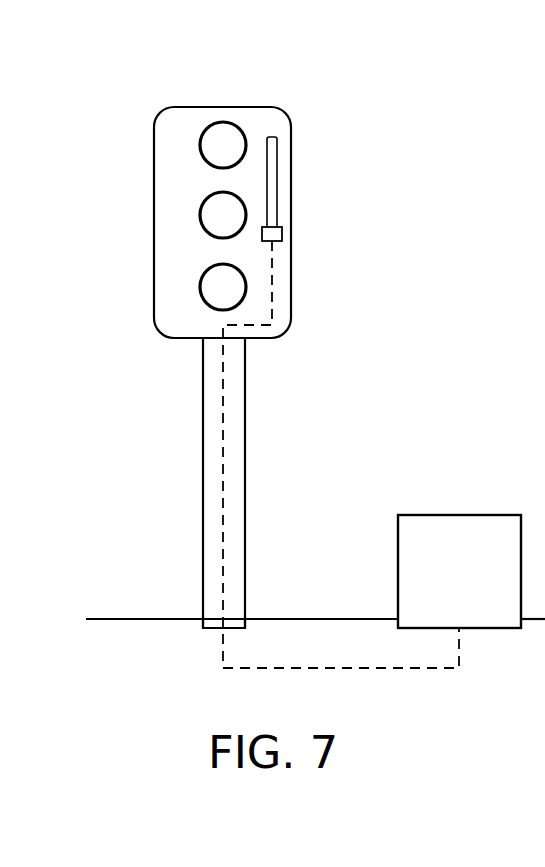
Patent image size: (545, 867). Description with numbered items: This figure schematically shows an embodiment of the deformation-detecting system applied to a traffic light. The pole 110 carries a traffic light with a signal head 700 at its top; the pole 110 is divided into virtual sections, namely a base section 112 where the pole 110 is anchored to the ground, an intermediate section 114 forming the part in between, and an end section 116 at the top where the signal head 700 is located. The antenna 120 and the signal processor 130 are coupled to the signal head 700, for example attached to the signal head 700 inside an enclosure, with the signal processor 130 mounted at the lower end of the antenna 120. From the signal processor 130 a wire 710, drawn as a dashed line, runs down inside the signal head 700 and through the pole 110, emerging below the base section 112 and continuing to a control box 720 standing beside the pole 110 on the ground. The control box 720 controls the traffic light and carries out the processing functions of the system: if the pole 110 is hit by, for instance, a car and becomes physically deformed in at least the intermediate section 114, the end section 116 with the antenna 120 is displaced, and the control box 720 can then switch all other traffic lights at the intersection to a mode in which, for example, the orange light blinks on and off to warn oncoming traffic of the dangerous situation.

The pole 110 is at (113, 102).
The signal head 700 is at (222, 107).
The end section 116 is at (170, 252).
The antenna 120 is at (272, 145).
The signal processor 130 is at (278, 235).
The intermediate section 114 is at (209, 467).
The base section 112 is at (209, 610).
The wire 710 is at (224, 406).
The control box 720 is at (440, 584).